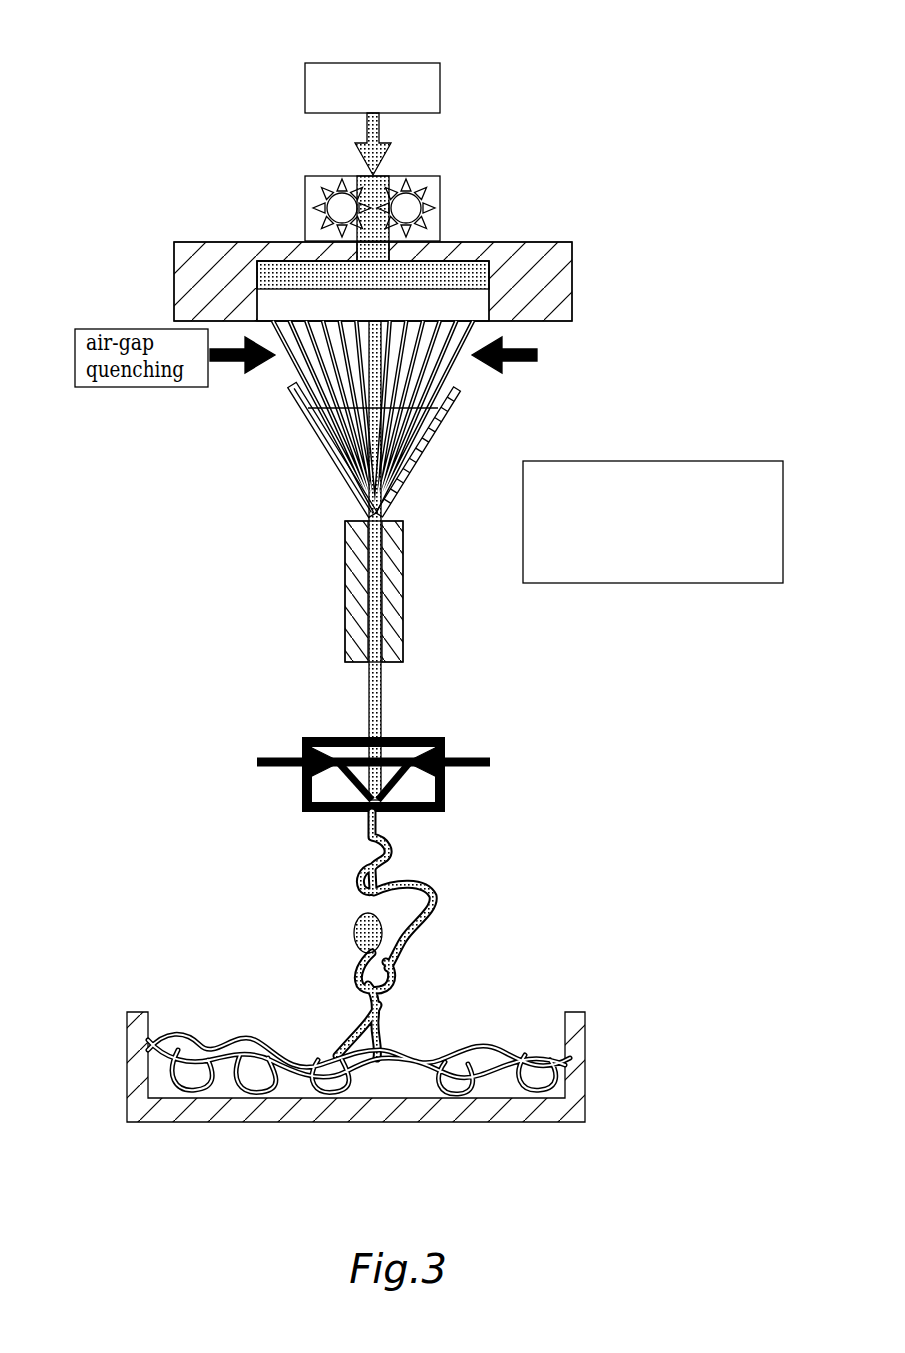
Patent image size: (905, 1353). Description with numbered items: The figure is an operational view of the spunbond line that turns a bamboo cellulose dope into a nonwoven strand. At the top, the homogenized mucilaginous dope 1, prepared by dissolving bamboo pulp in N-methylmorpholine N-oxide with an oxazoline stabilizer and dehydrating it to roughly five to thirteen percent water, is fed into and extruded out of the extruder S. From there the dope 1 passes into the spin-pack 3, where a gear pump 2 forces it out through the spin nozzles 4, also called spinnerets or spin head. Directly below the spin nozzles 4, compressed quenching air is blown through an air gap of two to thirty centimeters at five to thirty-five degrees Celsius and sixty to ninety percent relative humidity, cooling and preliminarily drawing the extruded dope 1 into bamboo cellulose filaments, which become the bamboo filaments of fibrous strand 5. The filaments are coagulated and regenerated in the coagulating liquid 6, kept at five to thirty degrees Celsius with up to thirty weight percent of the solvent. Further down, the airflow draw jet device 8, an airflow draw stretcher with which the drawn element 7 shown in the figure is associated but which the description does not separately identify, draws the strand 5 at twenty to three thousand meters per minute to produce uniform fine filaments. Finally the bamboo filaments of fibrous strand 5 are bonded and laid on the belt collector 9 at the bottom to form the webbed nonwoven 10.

The extruder S is at (373, 78).
The dope 1 is at (365, 135).
The gear pump 2 is at (410, 200).
The spin-pack 3 is at (190, 262).
The spin nozzles 4 is at (475, 310).
The bamboo filaments of fibrous strand 5 is at (405, 457).
The coagulating liquid 6 is at (325, 445).
The drawing air inlet 7 is at (462, 752).
The airflow draw jet device 8 is at (420, 790).
The belt collector 9 is at (578, 1072).
The webbed nonwoven 10 is at (380, 1095).